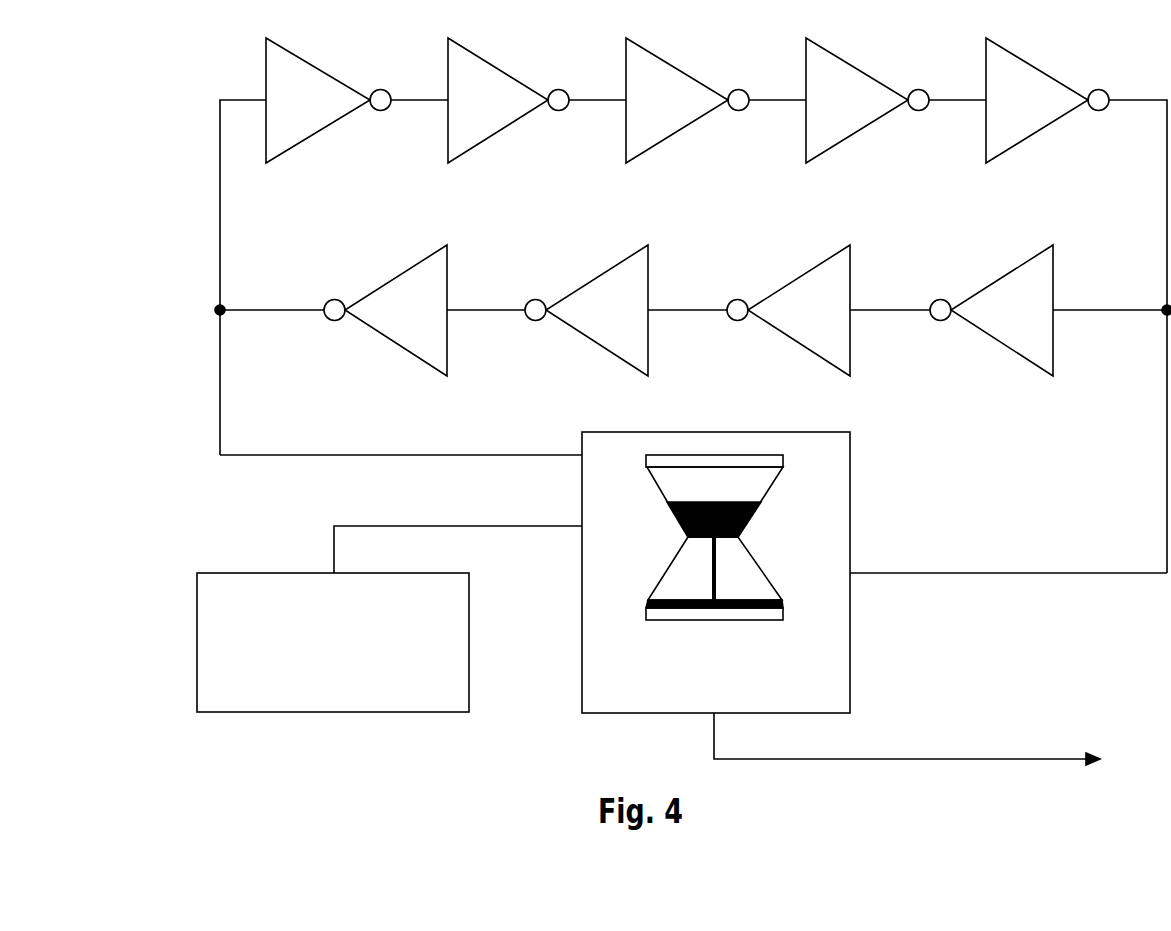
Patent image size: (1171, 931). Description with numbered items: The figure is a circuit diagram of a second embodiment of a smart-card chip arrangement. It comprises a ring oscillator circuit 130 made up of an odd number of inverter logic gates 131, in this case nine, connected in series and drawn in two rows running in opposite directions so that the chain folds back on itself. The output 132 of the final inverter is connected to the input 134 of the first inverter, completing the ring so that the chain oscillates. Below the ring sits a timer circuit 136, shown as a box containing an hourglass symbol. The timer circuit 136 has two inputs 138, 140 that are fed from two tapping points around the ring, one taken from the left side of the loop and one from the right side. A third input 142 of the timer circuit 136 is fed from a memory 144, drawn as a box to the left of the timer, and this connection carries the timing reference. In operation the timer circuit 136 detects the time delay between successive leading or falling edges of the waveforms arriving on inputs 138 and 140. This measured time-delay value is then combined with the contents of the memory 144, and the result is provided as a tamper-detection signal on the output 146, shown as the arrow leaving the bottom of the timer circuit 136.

The ring oscillator circuit 130 is at (727, 248).
The inverter logic gates 131 is at (304, 50).
The output of the final inverter 132 is at (297, 308).
The input of the first inverter 134 is at (228, 96).
The timer circuit 136 is at (852, 490).
The first input of the timer circuit 138 is at (535, 452).
The second input of the timer circuit 140 is at (957, 575).
The third input of the timer circuit 142 is at (503, 528).
The memory 144 is at (428, 714).
The output 146 is at (995, 760).